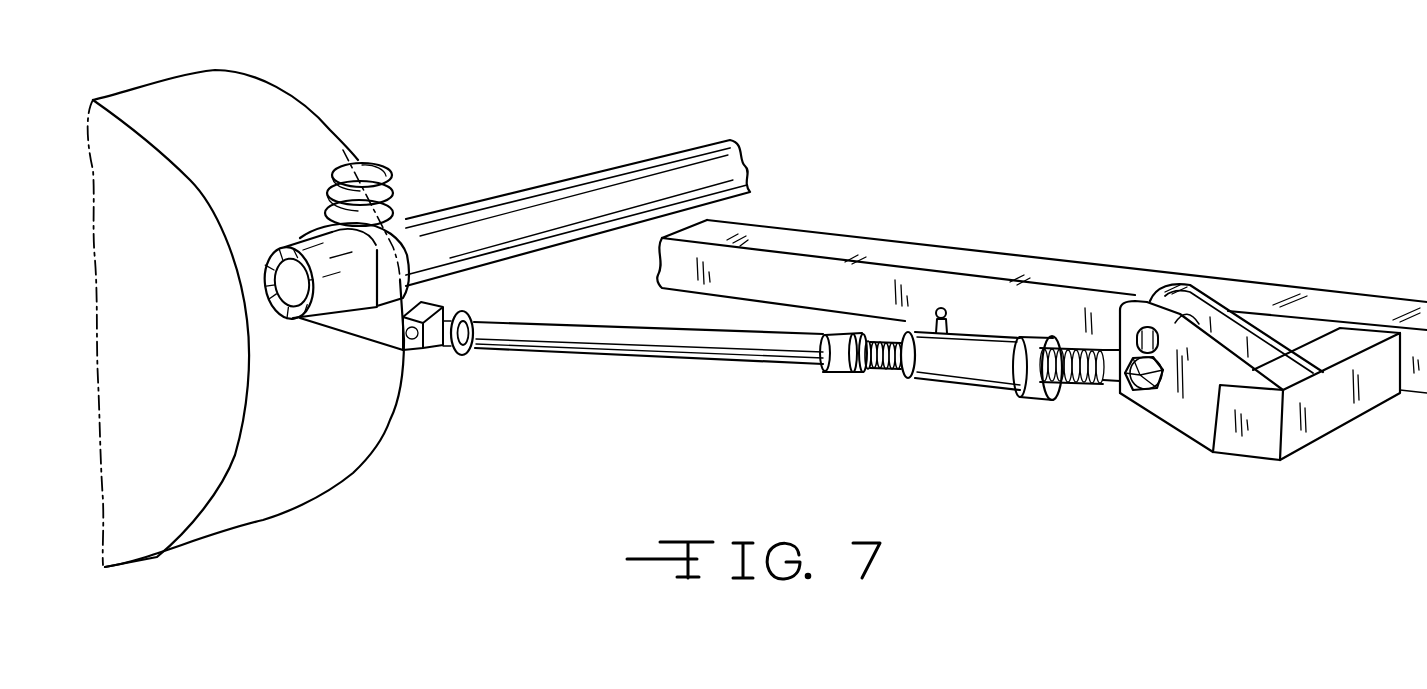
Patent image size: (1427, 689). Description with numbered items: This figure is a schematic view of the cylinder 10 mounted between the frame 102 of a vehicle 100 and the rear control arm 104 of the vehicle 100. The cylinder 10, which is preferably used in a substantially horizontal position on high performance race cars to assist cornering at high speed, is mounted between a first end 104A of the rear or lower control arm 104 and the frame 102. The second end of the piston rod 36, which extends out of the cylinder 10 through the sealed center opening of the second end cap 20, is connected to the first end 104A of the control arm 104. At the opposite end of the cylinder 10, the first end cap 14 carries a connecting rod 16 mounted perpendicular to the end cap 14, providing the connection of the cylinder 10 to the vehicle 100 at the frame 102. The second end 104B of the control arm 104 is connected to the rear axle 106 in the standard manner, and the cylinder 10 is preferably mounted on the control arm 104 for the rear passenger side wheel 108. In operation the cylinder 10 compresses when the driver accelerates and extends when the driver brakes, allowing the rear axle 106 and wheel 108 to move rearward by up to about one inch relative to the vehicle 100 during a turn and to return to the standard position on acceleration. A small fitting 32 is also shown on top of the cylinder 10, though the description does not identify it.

The vehicle 100 is at (868, 128).
The frame 102 is at (1050, 257).
The rear control arm 104 is at (640, 357).
The first end of the rear control arm 104A is at (828, 380).
The second end of the control arm 104B is at (475, 305).
The rear axle 106 is at (547, 182).
The rear passenger side wheel 108 is at (340, 465).
The cylinder 10 is at (980, 393).
The first end cap 14 is at (1033, 333).
The connecting rod 16 is at (1088, 382).
The second end cap 20 is at (903, 388).
The grease fitting 32 is at (943, 307).
The piston rod 36 is at (872, 377).